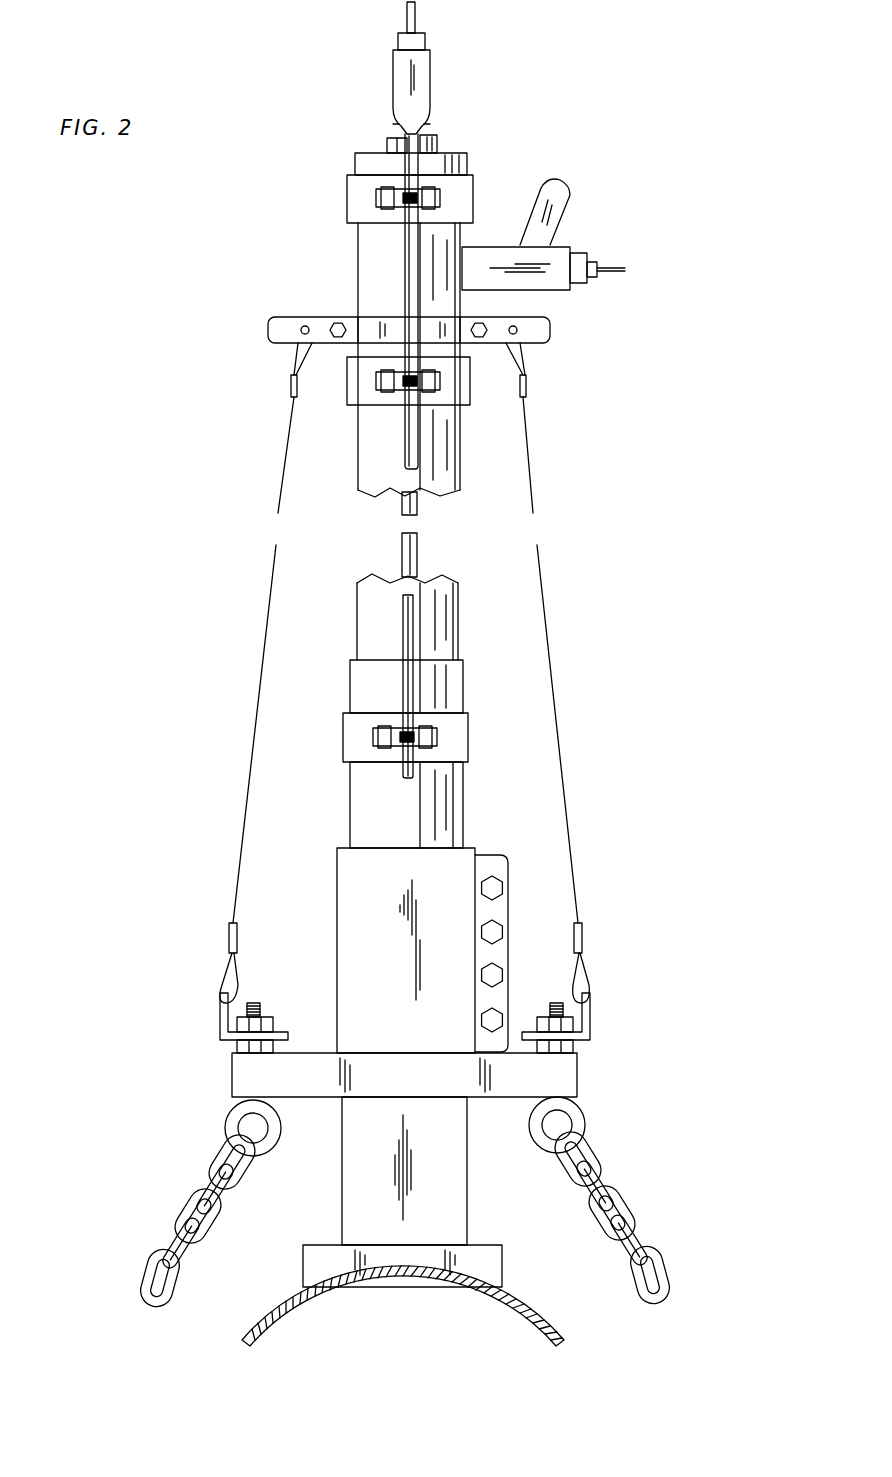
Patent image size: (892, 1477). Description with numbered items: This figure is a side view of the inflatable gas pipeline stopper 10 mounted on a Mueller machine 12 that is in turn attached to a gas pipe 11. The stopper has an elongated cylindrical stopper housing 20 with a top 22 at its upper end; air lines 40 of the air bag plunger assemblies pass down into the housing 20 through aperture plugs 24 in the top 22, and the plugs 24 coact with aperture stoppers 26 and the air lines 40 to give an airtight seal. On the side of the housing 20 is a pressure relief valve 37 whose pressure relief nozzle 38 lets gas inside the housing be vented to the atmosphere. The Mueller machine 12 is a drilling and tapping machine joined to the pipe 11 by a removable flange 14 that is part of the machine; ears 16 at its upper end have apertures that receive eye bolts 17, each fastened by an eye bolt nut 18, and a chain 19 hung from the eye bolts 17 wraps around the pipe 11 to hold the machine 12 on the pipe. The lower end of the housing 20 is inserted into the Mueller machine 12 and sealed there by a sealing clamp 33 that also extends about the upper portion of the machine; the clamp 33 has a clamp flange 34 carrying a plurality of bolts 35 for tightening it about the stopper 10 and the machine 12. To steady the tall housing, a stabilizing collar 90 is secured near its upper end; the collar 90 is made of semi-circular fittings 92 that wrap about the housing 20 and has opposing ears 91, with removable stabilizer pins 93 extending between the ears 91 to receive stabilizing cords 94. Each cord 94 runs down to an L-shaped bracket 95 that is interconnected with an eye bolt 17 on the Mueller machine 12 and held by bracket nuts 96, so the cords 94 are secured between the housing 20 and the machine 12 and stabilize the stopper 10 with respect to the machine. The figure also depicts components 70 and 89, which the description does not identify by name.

The inflatable gas pipeline stopper 10 is at (152, 795).
The pipe 11 is at (270, 1305).
The Mueller machine 12 is at (458, 1194).
The removable flange 14 is at (502, 1262).
The ears 16 is at (577, 1075).
The eye bolts 17 is at (235, 1112).
The eye bolt nut 18 is at (237, 1046).
The chain 19 is at (185, 1190).
The cylindrical stopper housing 20 is at (372, 452).
The top 22 is at (462, 155).
The aperture plugs 24 is at (387, 145).
The aperture stoppers 26 is at (405, 133).
The sealing clamp 33 is at (360, 890).
The clamp flange 34 is at (492, 858).
The bolts 35 is at (502, 890).
The pressure relief valve 37 is at (553, 280).
The pressure relief nozzle 38 is at (598, 265).
The air lines 40 is at (415, 22).
The flat bar 70 is at (400, 250).
The lever 89 is at (556, 185).
The stabilizing collar 90 is at (258, 330).
The opposing ears 91 is at (322, 317).
The stabilizing collar semi-circular fittings 92 is at (338, 338).
The removable stabilizer pins 93 is at (305, 326).
The stabilizing cord 94 is at (283, 470).
The brackets 95 is at (220, 1020).
The bracket nuts 96 is at (265, 1017).